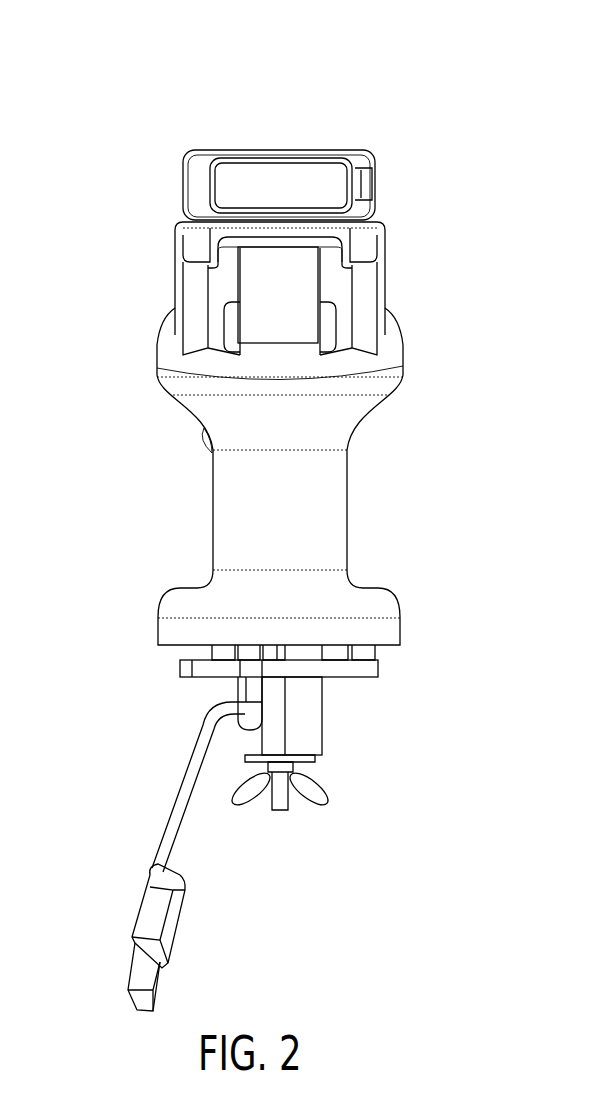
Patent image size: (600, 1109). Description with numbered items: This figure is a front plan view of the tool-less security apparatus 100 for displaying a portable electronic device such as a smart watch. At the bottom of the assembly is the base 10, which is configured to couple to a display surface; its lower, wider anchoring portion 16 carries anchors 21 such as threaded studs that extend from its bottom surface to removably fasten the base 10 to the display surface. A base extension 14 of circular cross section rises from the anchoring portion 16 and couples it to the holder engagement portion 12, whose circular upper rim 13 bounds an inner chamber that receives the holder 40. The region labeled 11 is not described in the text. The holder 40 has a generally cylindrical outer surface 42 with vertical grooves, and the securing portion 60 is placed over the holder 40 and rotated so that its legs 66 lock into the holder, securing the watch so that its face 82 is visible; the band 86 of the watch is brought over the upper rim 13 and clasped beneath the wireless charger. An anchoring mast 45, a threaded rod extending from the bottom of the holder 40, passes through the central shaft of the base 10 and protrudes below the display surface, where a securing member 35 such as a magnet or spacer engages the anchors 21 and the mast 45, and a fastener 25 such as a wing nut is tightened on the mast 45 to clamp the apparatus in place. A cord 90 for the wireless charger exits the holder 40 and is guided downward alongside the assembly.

The tool-less security apparatus 100 is at (90, 87).
The base 10 is at (183, 521).
The upper portion of housing 11 is at (146, 322).
The holder engagement portion 12 is at (177, 367).
The upper rim 13 is at (417, 641).
The base extension 14 is at (347, 493).
The anchoring portion 16 is at (372, 608).
The anchors 21 is at (207, 653).
The fastener 25 is at (322, 785).
The securing member 35 is at (379, 669).
The holder 40 is at (395, 261).
The outer surface 42 is at (387, 298).
The anchoring mast 45 is at (287, 648).
The securing portion 60 is at (181, 173).
The legs 66 is at (192, 305).
The face 82 is at (330, 183).
The band 86 is at (285, 311).
The cords 90 is at (181, 803).